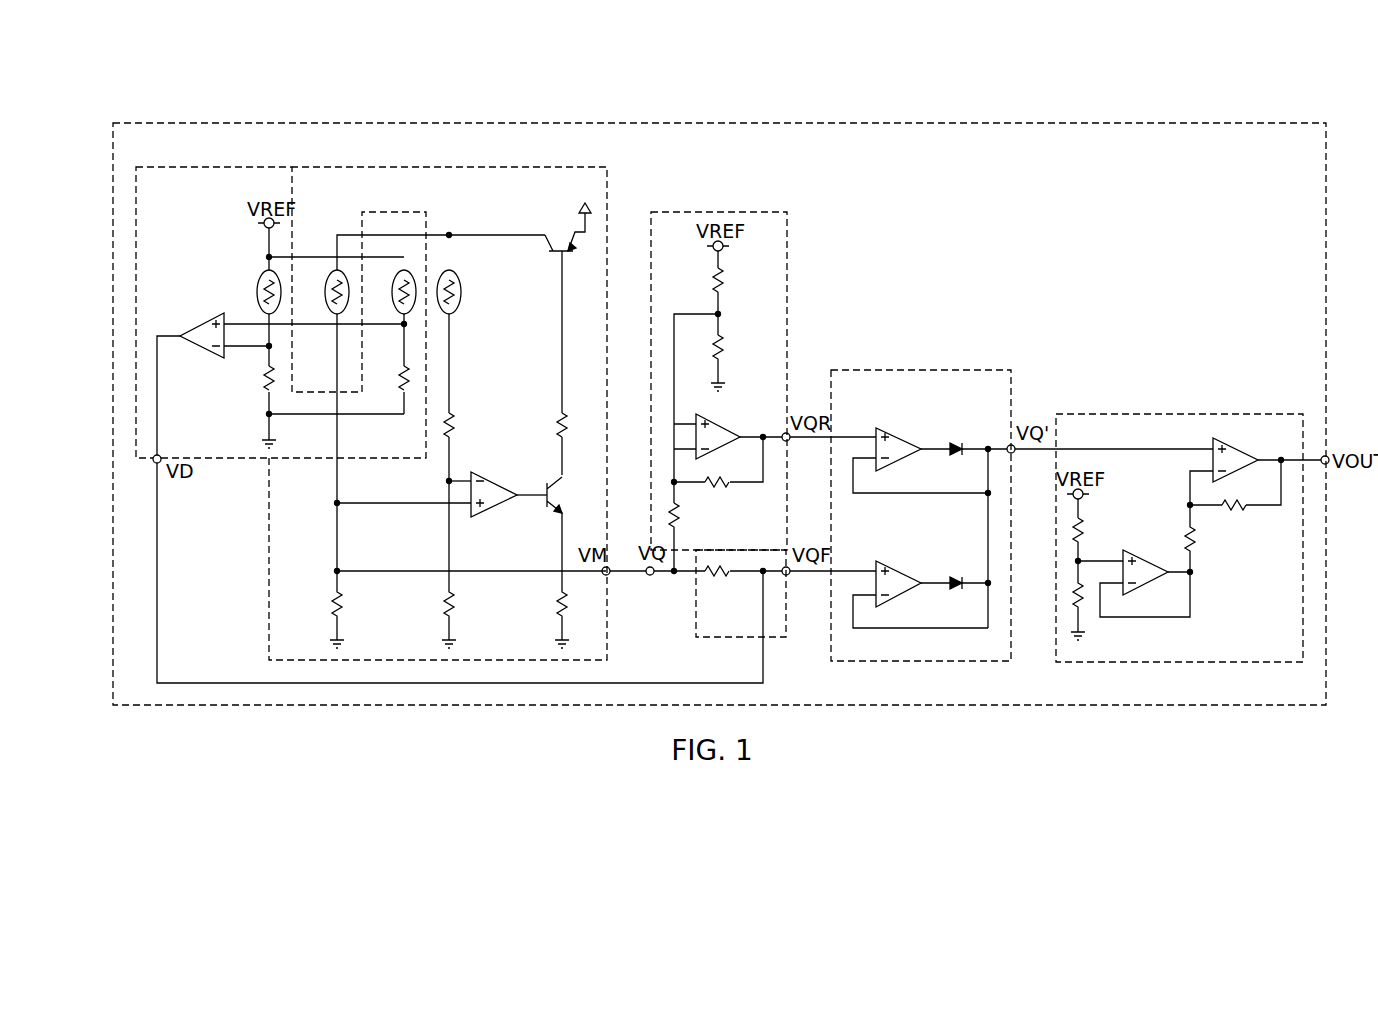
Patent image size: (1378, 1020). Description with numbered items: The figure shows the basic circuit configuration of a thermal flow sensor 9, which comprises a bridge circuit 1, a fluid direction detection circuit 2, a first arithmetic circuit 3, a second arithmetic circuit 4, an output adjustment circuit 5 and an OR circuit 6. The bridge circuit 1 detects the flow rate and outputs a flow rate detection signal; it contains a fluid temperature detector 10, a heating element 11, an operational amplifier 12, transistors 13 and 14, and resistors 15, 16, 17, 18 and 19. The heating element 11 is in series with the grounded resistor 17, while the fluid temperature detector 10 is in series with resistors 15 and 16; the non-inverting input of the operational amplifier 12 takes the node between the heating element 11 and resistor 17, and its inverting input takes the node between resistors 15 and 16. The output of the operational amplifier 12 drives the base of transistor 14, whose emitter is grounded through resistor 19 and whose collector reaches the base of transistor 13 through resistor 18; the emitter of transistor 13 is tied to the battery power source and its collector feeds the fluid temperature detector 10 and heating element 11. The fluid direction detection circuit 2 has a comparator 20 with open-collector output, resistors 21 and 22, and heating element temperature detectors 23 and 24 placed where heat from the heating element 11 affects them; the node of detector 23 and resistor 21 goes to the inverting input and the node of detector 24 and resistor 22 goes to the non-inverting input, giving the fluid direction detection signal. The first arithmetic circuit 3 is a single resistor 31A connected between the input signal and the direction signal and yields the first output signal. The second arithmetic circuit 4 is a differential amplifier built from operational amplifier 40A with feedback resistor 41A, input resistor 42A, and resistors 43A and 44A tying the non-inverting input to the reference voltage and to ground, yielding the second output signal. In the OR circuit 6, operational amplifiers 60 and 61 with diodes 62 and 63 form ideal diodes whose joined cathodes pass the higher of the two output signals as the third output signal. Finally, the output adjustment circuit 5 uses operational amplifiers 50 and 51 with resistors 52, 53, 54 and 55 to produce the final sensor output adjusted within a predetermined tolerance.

The bridge circuit 1 is at (463, 167).
The fluid direction detection circuit 2 is at (183, 167).
The first arithmetic circuit 3 is at (703, 638).
The second arithmetic circuit 4 is at (775, 212).
The output adjustment circuit 5 is at (1136, 414).
The OR circuit 6 is at (868, 370).
The thermal flow sensor 9 is at (1272, 122).
The fluid temperature detector 10 is at (462, 297).
The heating element 11 is at (327, 290).
The operational amplifier 12 is at (489, 470).
The transistor 13 is at (558, 265).
The transistor 14 is at (548, 510).
The resistor 15 is at (457, 420).
The resistor 16 is at (460, 605).
The resistor 17 is at (330, 602).
The resistor 18 is at (554, 420).
The resistor 19 is at (554, 610).
The comparator 20 is at (198, 320).
The resistor 21 is at (258, 384).
The resistor 22 is at (398, 382).
The heating element temperature detector 23 is at (260, 286).
The heating element temperature detector 24 is at (395, 293).
The resistor 31A is at (712, 582).
The operational amplifier 40A is at (716, 414).
The resistor 41A is at (722, 492).
The resistor 42A is at (685, 516).
The resistor 43A is at (733, 278).
The resistor 44A is at (733, 348).
The operational amplifier 50 is at (1242, 448).
The operational amplifier 51 is at (1136, 590).
The resistor 52 is at (1095, 530).
The resistor 53 is at (1085, 612).
The resistor 54 is at (1240, 512).
The resistor 55 is at (1205, 542).
The operational amplifier 60 is at (886, 561).
The operational amplifier 61 is at (886, 428).
The diode 62 is at (956, 574).
The diode 63 is at (958, 440).